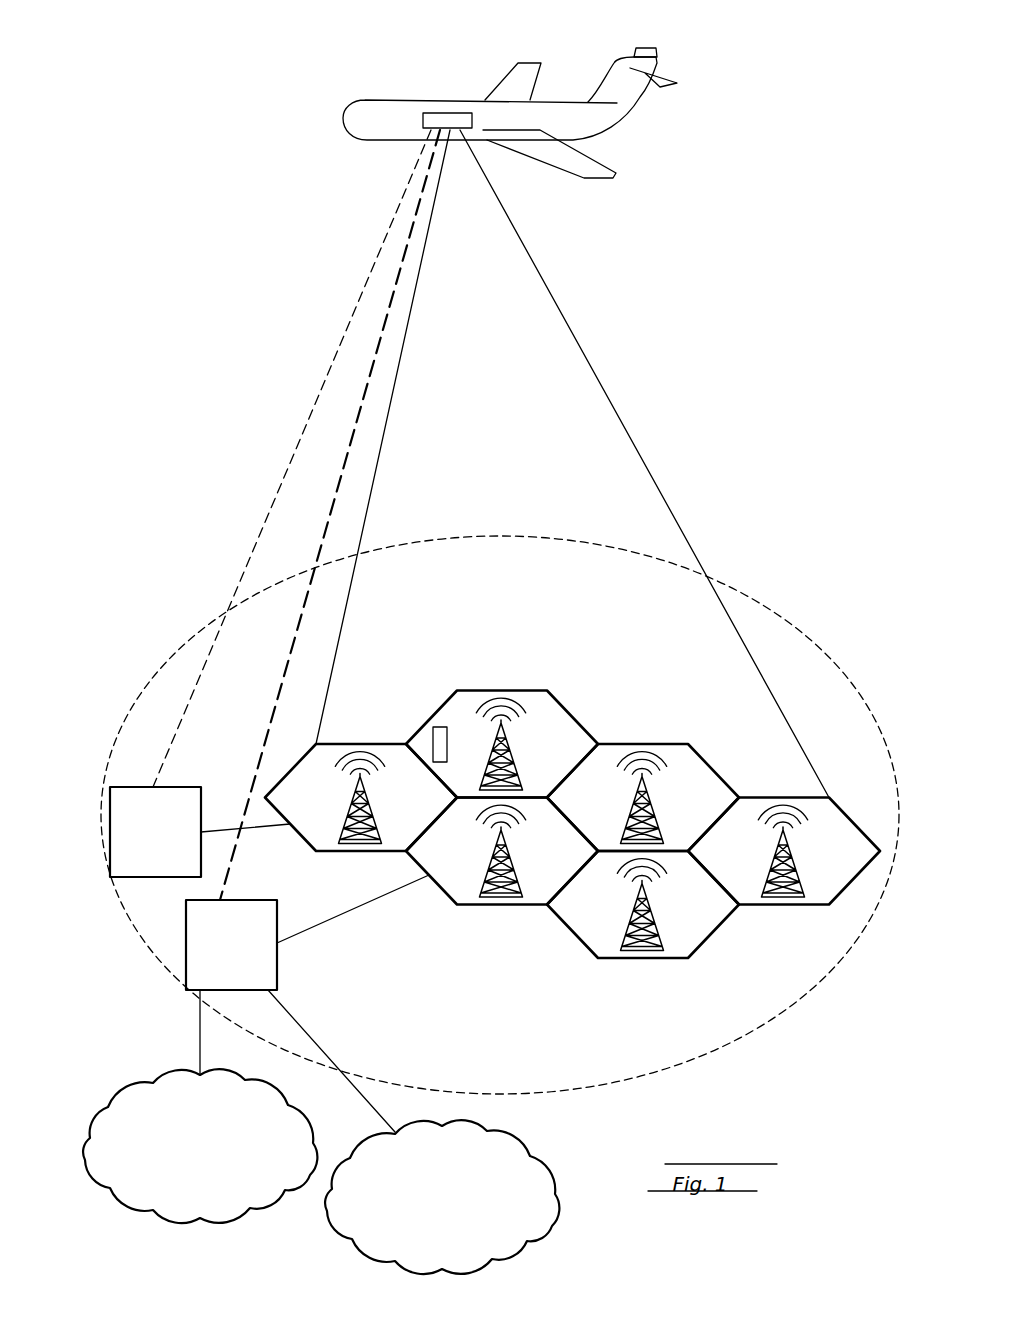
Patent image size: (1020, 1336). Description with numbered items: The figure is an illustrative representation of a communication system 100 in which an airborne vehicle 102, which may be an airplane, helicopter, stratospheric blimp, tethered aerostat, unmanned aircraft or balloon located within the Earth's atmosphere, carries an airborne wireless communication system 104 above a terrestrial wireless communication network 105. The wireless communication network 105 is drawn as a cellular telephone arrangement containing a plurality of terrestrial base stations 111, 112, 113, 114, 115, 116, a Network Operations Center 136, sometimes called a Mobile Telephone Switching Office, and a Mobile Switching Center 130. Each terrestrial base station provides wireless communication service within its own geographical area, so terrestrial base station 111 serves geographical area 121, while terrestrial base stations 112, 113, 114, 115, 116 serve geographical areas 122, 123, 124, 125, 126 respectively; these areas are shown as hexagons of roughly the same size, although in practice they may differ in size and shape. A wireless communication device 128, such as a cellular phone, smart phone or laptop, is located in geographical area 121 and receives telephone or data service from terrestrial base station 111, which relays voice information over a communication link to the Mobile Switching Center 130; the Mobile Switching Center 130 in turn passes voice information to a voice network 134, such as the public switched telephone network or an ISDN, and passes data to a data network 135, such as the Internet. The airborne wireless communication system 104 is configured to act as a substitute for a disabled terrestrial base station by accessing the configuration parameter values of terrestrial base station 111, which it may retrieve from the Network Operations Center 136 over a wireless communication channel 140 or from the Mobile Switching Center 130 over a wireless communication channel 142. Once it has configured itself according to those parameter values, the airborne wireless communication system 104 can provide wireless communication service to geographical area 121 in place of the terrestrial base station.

The communication system 100 is at (178, 60).
The airborne vehicle 102 is at (344, 117).
The airborne wireless communication system 104 is at (425, 112).
The wireless communication network 105 is at (152, 670).
The terrestrial base station 111 is at (517, 768).
The terrestrial base station 112 is at (643, 813).
The terrestrial base station 113 is at (800, 875).
The terrestrial base station 114 is at (357, 817).
The terrestrial base station 115 is at (481, 875).
The terrestrial base station 116 is at (627, 930).
The geographical area 121 is at (443, 702).
The geographical area 122 is at (712, 770).
The geographical area 123 is at (783, 906).
The geographical area 124 is at (360, 853).
The geographical area 125 is at (492, 906).
The geographical area 126 is at (640, 960).
The wireless communication device 128 is at (432, 750).
The Mobile Switching Center 130 is at (216, 972).
The voice network 134 is at (184, 1162).
The data network 135 is at (429, 1209).
The Network Operations Center 136 is at (139, 859).
The wireless communication channel 140 is at (302, 445).
The wireless communication channel 142 is at (375, 360).